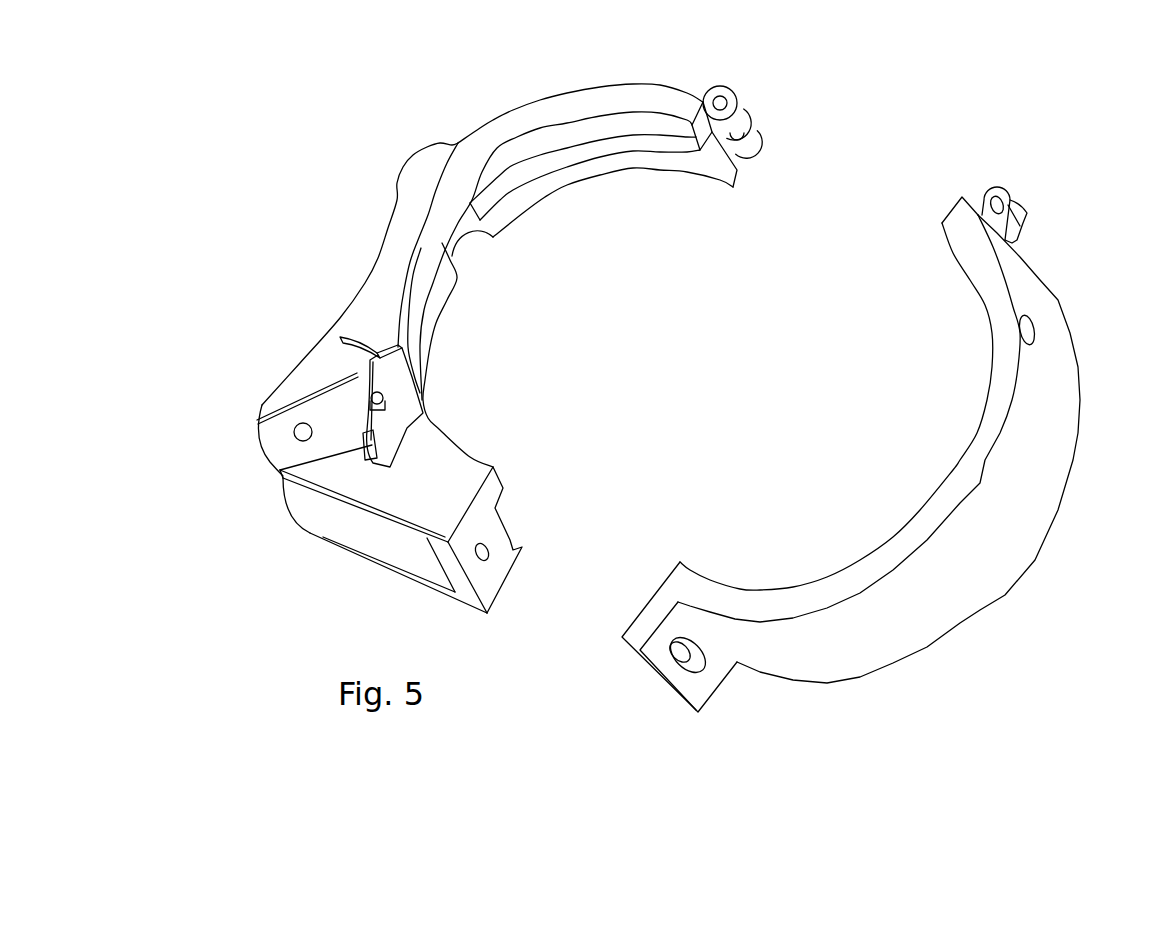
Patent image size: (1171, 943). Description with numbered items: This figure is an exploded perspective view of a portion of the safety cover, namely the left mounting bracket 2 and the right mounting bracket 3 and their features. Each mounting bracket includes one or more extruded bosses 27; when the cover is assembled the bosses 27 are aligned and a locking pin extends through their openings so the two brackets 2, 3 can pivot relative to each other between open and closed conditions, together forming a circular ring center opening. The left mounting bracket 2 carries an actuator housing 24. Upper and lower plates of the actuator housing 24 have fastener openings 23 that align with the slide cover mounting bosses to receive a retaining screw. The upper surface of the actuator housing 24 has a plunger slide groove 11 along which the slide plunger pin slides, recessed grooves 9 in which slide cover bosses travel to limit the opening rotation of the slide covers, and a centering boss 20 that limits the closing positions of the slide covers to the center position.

The left mounting bracket 2 is at (501, 108).
The right mounting bracket 3 is at (1083, 407).
The recessed groove 9 is at (316, 351).
The plunger slide groove 11 is at (264, 439).
The centering boss 20 is at (362, 371).
The fastener opening 23 is at (300, 428).
The actuator housing 24 is at (228, 551).
The extruded boss 27 is at (956, 174).